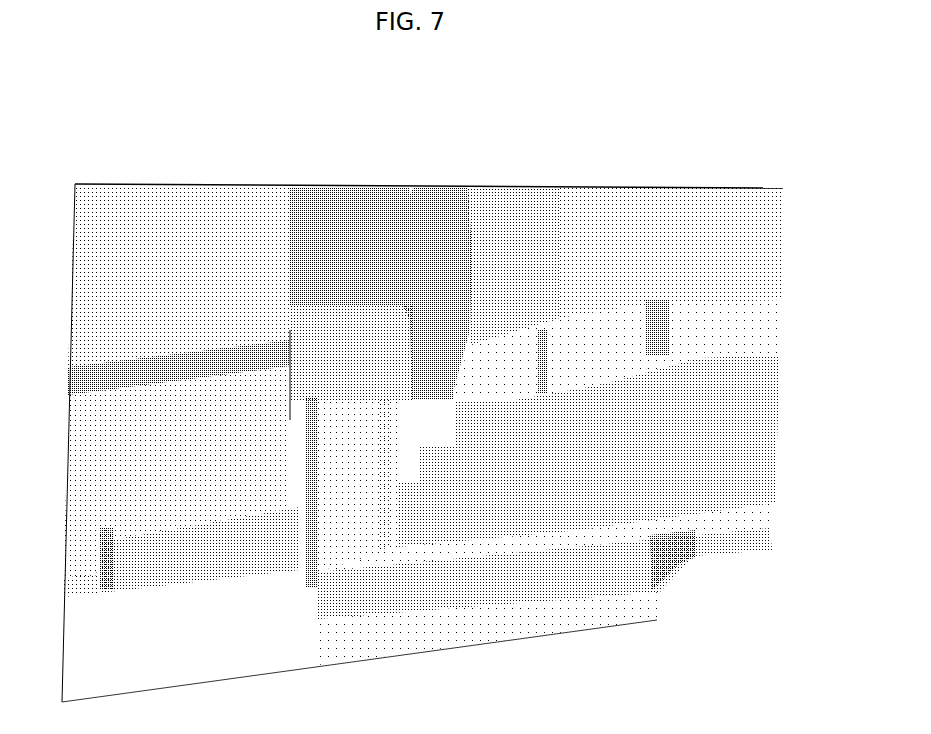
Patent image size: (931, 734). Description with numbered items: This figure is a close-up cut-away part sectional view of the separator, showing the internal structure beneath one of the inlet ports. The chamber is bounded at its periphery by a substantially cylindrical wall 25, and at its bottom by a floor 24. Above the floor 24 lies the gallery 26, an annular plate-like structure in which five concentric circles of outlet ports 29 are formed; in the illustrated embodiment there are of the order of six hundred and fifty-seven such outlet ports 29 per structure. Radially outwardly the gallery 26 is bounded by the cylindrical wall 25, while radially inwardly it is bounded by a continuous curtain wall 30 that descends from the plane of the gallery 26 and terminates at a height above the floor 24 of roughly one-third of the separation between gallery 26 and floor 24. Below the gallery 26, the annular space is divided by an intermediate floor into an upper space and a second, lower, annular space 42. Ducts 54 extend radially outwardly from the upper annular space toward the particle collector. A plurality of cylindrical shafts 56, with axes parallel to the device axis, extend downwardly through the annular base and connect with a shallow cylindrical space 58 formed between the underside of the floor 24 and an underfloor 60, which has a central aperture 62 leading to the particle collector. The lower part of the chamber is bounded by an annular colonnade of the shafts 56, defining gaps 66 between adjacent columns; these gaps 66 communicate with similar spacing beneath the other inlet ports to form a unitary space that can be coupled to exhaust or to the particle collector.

The floor 24 is at (663, 463).
The cylindrical wall 25 is at (146, 275).
The gallery 26 is at (463, 188).
The outlet ports 29 is at (323, 188).
The curtain wall 30 is at (713, 243).
The second annular space 42 is at (313, 397).
The ducts 54 is at (98, 375).
The cylindrical shafts 56 is at (497, 370).
The cylindrical space 58 is at (603, 582).
The underfloor 60 is at (527, 620).
The central aperture 62 is at (692, 560).
The gaps 66 is at (234, 549).